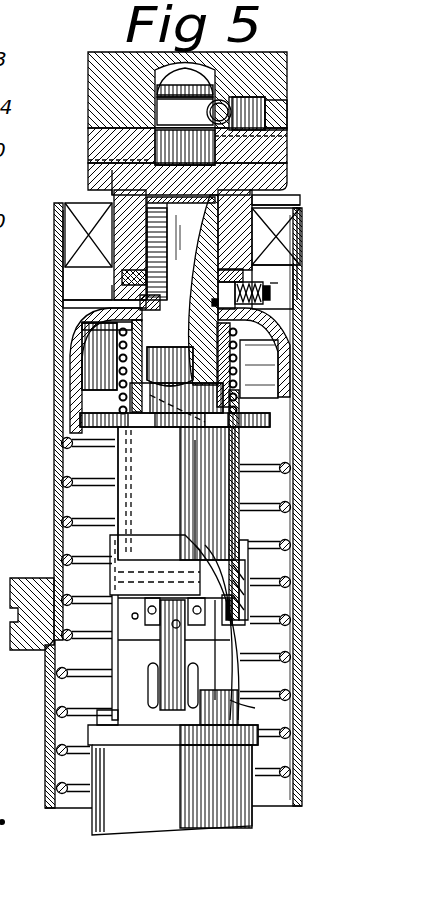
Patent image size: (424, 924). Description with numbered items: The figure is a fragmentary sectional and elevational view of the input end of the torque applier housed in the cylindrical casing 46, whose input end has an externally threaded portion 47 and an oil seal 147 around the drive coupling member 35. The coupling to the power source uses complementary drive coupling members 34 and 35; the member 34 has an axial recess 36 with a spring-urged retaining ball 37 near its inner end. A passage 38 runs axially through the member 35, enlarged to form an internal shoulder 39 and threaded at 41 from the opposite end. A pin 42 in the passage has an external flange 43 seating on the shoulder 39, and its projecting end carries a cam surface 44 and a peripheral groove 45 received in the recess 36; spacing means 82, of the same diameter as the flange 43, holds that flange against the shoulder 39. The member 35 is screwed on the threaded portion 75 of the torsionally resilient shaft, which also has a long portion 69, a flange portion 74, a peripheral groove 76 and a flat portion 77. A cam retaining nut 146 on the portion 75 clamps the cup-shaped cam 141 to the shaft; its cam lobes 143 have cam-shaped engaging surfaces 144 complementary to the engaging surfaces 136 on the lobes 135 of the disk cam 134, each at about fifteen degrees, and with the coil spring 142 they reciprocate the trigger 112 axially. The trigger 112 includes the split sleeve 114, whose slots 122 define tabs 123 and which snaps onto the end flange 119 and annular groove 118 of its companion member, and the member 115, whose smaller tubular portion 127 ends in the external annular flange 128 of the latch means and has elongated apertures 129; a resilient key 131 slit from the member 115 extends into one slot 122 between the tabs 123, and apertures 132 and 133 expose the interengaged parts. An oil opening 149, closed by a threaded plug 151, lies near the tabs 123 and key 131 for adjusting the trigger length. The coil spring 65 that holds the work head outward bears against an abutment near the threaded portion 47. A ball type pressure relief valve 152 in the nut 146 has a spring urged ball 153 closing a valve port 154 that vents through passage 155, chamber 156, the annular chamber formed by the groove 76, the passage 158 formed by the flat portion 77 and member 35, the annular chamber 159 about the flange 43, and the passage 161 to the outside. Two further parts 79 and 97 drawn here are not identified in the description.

The drive coupling member 34 is at (90, 62).
The cam surface 44 is at (175, 72).
The axial recess 36 is at (155, 99).
The peripheral groove 45 is at (158, 112).
The retaining ball 37 is at (228, 105).
The pin 42 is at (150, 155).
The drive coupling member 35 is at (120, 178).
The external flange 43 is at (146, 182).
The internal shoulder 39 is at (150, 196).
The passage 38 is at (285, 170).
The annular chamber 159 is at (262, 185).
The passage 161 is at (252, 195).
The spacing means 82 is at (258, 210).
The flat portion 77 is at (302, 225).
The casing 46 is at (304, 482).
The threaded portion 75 is at (66, 236).
The passage 158 is at (63, 252).
The threaded portion 41 is at (303, 240).
The oil seal 147 is at (288, 249).
The externally threaded portion 47 is at (297, 268).
The passage 155 is at (219, 278).
The pressure relief valve 152 is at (272, 283).
The spring urged ball 153 is at (270, 320).
The valve port 154 is at (265, 335).
The cup-shaped cam 141 is at (282, 350).
The bell member 79 is at (74, 337).
The peripheral groove 76 is at (78, 308).
The flange portion 74 is at (82, 322).
The cam retaining nut 146 is at (63, 287).
The chamber 156 is at (122, 281).
The long portion 69 is at (58, 365).
The coil spring 142 is at (250, 372).
The cam-shaped engaging surface 144 is at (262, 395).
The disk cam 134 is at (278, 418).
The cam lobes 143 is at (176, 453).
The cam lobes 135 is at (200, 430).
The cam-shaped engaging surface 136 is at (215, 440).
The tubular trigger 112 is at (112, 498).
The annular groove 118 is at (245, 540).
The coil spring 65 is at (270, 553).
The tubular member 114 is at (246, 575).
The tubular member 115 is at (232, 598).
The tabs 123 is at (230, 618).
The slots 122 is at (180, 624).
The external end flange 119 is at (118, 572).
The aperture 132 is at (162, 598).
The threaded plug 151 is at (2, 598).
The opening 149 is at (132, 615).
The aperture 133 is at (128, 621).
The resilient key 131 is at (165, 650).
The elongated apertures 129 is at (150, 688).
The tubular portion 127 is at (265, 688).
The cap 97 is at (250, 716).
The external annular flange 128 is at (146, 722).